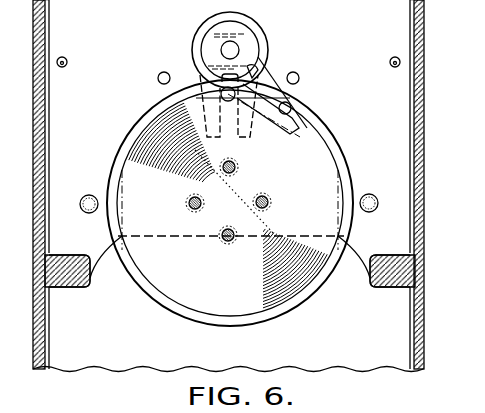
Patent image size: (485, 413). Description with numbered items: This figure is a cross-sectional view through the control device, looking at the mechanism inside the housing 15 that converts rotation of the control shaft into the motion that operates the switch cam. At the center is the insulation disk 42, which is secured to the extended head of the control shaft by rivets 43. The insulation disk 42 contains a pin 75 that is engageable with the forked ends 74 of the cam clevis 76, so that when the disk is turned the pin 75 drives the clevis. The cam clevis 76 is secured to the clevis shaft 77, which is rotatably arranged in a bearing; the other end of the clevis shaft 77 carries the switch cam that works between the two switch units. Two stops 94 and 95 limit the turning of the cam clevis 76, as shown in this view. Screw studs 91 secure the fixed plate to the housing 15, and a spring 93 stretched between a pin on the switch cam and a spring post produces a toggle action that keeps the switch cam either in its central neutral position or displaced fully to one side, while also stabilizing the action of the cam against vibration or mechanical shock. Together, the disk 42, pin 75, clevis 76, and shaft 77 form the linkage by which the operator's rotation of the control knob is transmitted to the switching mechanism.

The housing 15 is at (33, 152).
The insulation disk 42 is at (305, 125).
The rivets 43 is at (263, 195).
The forked ends 74 is at (292, 122).
The pin 75 is at (197, 99).
The cam clevis 76 is at (240, 38).
The clevis shaft 77 is at (223, 44).
The screw studs 91 is at (62, 288).
The spring 93 is at (396, 10).
The stop 94 is at (295, 72).
The stop 95 is at (162, 72).